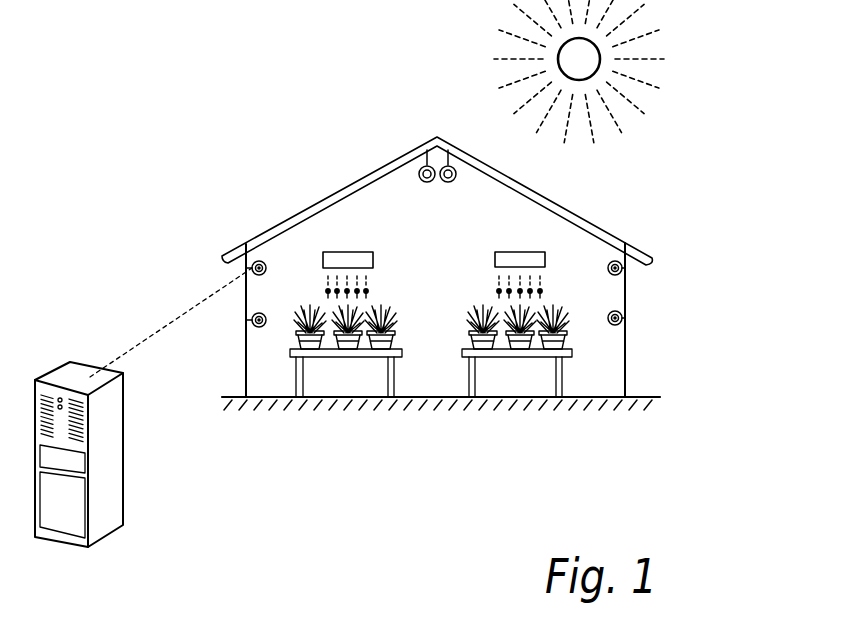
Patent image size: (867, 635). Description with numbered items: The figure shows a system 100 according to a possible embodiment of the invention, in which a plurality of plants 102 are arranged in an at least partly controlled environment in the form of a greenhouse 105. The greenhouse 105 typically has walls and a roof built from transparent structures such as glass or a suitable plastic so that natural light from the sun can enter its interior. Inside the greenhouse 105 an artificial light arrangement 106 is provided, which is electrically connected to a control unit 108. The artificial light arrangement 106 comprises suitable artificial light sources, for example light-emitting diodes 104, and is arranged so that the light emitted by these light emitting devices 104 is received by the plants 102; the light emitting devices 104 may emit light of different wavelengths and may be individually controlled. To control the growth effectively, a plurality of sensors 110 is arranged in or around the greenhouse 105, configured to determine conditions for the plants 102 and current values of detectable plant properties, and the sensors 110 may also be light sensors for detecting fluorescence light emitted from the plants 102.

The system 100 is at (688, 160).
The plants 102 is at (318, 313).
The light-emitting diodes 104 is at (540, 265).
The greenhouse 105 is at (623, 238).
The artificial light arrangement 106 is at (352, 257).
The control unit 108 is at (65, 377).
The sensors 110 is at (247, 252).